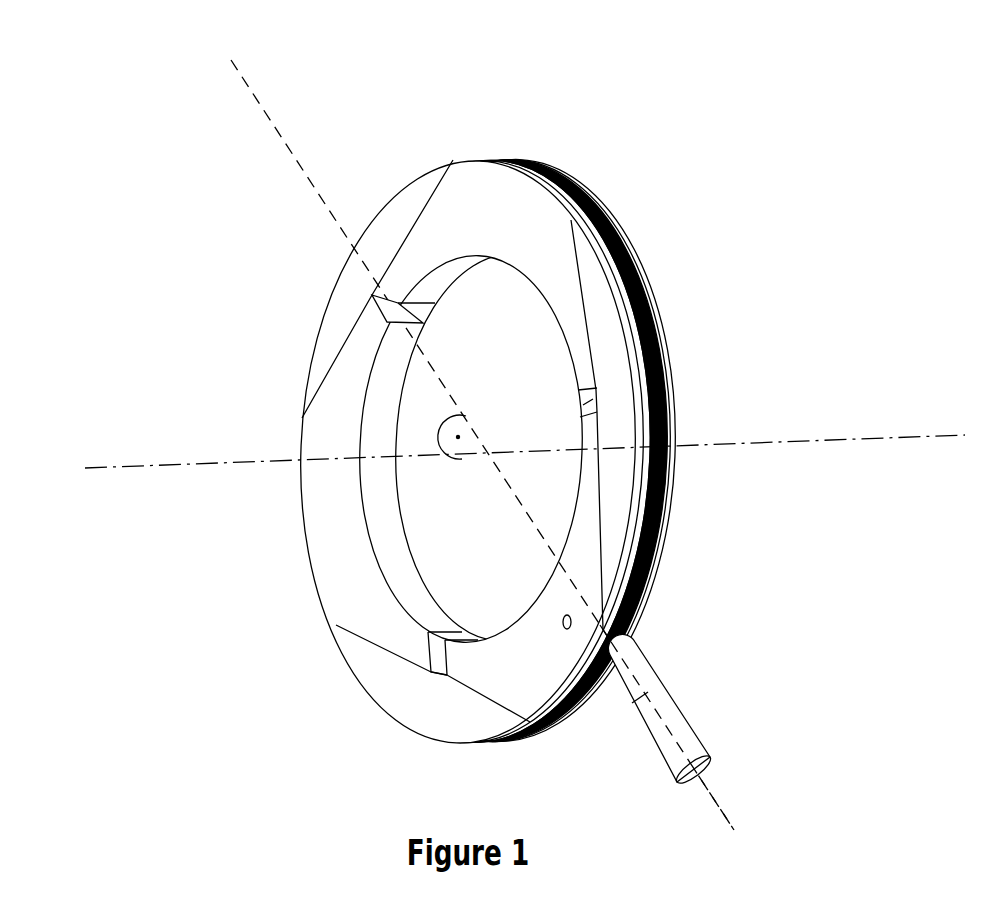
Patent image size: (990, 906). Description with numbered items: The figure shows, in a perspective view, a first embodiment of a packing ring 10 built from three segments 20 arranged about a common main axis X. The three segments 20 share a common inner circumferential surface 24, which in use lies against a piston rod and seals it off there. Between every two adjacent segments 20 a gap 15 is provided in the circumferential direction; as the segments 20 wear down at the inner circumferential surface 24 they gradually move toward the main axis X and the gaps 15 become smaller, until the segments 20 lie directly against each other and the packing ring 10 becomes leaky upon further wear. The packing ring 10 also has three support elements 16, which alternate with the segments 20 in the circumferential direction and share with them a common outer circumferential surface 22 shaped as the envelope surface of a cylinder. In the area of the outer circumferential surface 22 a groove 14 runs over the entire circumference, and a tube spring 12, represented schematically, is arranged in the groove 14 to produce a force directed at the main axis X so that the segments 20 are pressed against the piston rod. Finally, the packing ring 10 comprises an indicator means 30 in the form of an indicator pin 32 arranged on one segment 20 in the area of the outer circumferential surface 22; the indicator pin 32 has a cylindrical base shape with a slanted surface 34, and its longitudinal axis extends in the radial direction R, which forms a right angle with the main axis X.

The packing ring 10 is at (497, 434).
The tube spring 12 is at (497, 434).
The groove 14 is at (663, 552).
The gap 15 is at (372, 296).
The support element 16 is at (388, 235).
The segment 20 is at (490, 185).
The outer circumferential surface 22 is at (667, 493).
The inner circumferential surface 24 is at (385, 403).
The indicator means 30 is at (759, 766).
The indicator pin 32 is at (665, 698).
The slanted surface 34 is at (661, 765).
The radial direction R is at (278, 125).
The main axis X is at (932, 436).